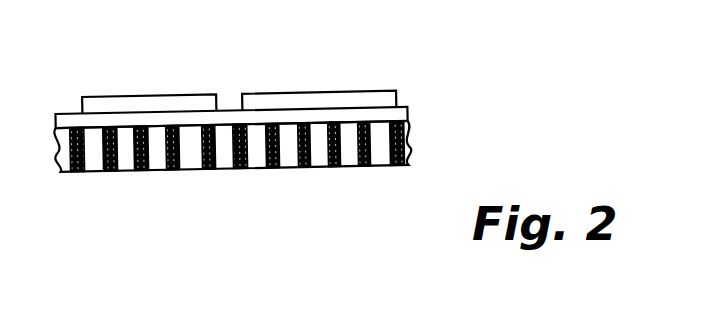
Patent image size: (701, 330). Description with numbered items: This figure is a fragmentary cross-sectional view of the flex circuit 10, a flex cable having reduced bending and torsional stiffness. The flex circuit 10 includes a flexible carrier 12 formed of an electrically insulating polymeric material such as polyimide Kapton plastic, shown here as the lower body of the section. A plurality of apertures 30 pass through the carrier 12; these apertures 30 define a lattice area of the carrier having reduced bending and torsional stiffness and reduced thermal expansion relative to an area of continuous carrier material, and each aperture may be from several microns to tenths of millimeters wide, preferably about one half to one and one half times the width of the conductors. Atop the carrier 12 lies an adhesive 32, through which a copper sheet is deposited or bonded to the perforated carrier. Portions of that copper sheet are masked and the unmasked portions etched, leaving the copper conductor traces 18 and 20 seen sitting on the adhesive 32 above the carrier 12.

The flex circuit 10 is at (424, 58).
The flexible carrier 12 is at (407, 136).
The copper conductor trace 18 is at (125, 93).
The copper conductor trace 20 is at (270, 93).
The apertures 30 is at (258, 168).
The adhesive 32 is at (407, 113).